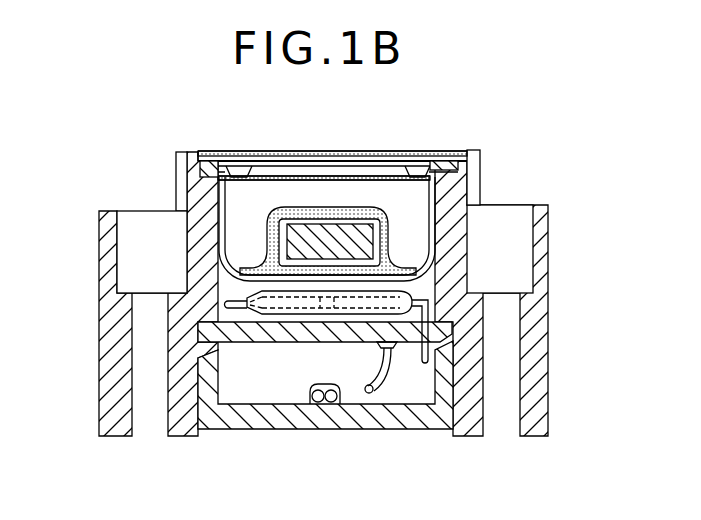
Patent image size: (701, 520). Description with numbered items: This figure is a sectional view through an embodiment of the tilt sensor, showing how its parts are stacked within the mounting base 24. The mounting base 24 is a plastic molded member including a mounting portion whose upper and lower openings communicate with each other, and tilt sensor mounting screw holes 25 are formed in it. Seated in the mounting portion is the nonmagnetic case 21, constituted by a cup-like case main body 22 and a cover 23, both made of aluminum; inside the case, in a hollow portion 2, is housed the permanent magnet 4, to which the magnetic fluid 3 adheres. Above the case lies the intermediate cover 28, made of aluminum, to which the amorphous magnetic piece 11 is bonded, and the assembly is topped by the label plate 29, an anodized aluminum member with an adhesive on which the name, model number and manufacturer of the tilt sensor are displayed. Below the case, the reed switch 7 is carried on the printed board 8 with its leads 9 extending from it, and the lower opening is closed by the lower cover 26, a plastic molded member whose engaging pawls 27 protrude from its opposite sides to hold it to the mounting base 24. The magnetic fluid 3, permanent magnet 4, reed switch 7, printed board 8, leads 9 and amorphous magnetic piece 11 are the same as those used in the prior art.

The hollow portion 2 is at (276, 188).
The magnetic fluid 3 is at (362, 212).
The permanent magnet 4 is at (340, 237).
The reed switch 7 is at (388, 291).
The printed board 8 is at (315, 388).
The leads 9 is at (378, 360).
The amorphous magnetic piece 11 is at (380, 155).
The nonmagnetic case 21 is at (438, 172).
The case main body 22 is at (437, 198).
The cover 23 is at (402, 162).
The mounting base 24 is at (197, 190).
The tilt sensor mounting screw holes 25 is at (138, 223).
The lower cover 26 is at (327, 417).
The engaging pawls 27 is at (285, 333).
The intermediate cover 28 is at (222, 172).
The label plate 29 is at (313, 151).